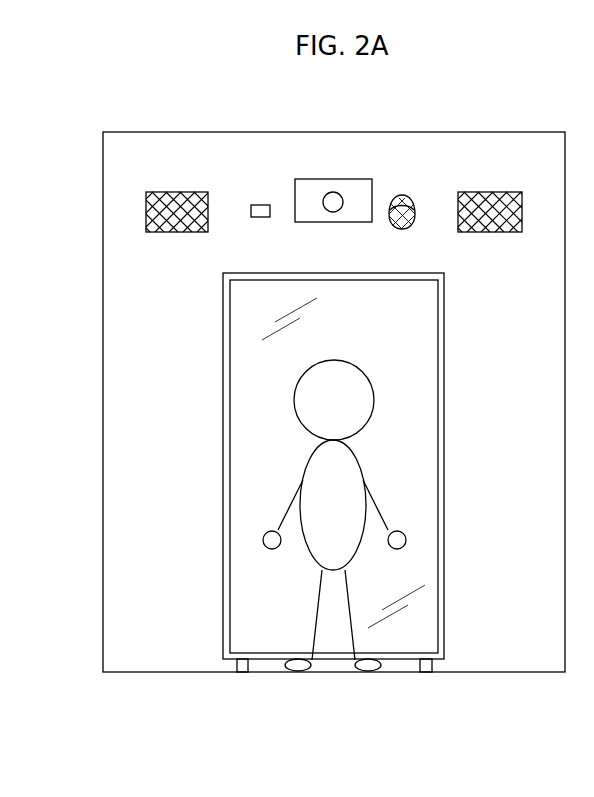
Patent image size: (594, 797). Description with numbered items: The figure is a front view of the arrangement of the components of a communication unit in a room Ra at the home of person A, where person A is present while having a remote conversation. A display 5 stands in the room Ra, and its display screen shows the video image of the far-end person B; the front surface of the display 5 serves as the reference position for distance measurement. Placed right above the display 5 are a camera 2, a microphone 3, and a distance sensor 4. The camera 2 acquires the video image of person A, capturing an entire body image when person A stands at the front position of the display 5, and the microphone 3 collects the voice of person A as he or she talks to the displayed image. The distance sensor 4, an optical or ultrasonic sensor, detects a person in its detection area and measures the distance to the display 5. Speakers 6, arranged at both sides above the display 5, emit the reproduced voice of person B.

The room Ra is at (140, 376).
The camera 2 is at (331, 179).
The microphone 3 is at (401, 195).
The distance sensor 4 is at (260, 205).
The display 5 is at (444, 338).
The speakers 6 is at (178, 192).